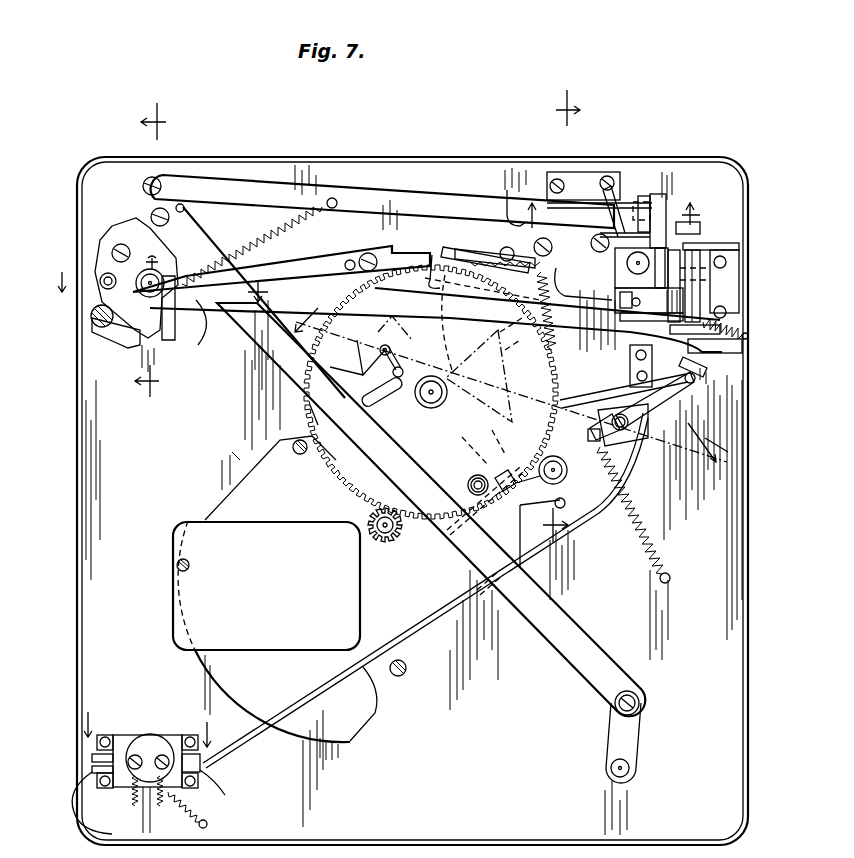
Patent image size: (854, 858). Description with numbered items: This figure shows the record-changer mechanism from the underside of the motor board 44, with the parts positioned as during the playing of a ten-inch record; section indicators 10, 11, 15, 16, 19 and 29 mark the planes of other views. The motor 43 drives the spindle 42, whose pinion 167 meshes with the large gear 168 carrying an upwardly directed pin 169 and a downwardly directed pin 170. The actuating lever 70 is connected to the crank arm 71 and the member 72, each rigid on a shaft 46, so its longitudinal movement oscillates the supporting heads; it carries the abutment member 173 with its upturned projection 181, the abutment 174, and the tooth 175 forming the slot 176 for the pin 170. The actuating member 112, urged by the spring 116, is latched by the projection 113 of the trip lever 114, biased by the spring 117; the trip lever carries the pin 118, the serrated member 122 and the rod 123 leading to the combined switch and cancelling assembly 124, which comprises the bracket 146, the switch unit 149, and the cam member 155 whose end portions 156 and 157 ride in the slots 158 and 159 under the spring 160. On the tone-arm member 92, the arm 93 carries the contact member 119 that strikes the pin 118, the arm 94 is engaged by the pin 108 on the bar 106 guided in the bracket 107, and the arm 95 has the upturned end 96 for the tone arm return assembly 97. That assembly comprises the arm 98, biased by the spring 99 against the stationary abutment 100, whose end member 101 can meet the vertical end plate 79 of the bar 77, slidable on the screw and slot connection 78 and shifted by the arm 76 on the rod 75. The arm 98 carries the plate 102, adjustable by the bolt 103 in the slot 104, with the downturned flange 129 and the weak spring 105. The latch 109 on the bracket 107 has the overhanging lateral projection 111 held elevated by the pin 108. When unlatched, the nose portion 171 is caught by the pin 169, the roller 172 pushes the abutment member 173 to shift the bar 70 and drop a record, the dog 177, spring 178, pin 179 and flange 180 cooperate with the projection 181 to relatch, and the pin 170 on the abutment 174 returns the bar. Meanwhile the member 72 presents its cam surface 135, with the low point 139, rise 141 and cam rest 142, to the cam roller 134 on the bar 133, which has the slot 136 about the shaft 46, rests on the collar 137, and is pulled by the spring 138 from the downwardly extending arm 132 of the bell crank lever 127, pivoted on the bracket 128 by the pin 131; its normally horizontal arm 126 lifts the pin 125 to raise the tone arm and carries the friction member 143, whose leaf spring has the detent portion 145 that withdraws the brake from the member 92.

The section line 10- 10 is at (554, 319).
The section line 11- 11 is at (154, 287).
The section line 15- 15 is at (138, 250).
The section line 16- 16 is at (150, 720).
The section line 19- 19 is at (517, 385).
The section line 29- 29 is at (613, 214).
The spindle 42 is at (370, 521).
The motor 43 is at (266, 586).
The motor board 44 is at (232, 454).
The shaft 46 is at (168, 341).
The actuating lever 70 is at (553, 632).
The crank arm 71 is at (610, 740).
The member 72 is at (108, 240).
The rod 75 is at (112, 255).
The arm 76 is at (100, 288).
The bar 77 is at (201, 340).
The screw and slot connection 78 is at (358, 256).
The vertical end plate 79 is at (165, 208).
The member 92 is at (668, 218).
The arm 93 is at (681, 364).
The arm 94 is at (704, 224).
The arm 95 is at (616, 268).
The upturned end 96 is at (497, 352).
The tone arm return assembly 97 is at (572, 298).
The arm 98 is at (571, 248).
The spring 99 is at (640, 336).
The stationary abutment 100 is at (496, 334).
The end member 101 is at (455, 320).
The plate 102 is at (500, 245).
The bolt 103 is at (510, 186).
The slot 104 is at (580, 204).
The spring 105 is at (480, 250).
The bar 106 is at (482, 245).
The bracket 107 is at (612, 205).
The pin 108 is at (570, 152).
The latch 109 is at (617, 248).
The overhanging lateral projection 111 is at (668, 200).
The actuating member 112 is at (598, 494).
The projection 113 is at (628, 352).
The trip lever 114 is at (697, 386).
The spring 116 is at (613, 543).
The spring 117 is at (624, 440).
The pin 118 is at (743, 356).
The contact member 119 is at (630, 406).
The member 122 is at (694, 377).
The rod 123 is at (373, 723).
The combined switch and cancelling assembly 124 is at (143, 727).
The pin 125 is at (742, 262).
The normally horizontal arm 126 is at (702, 283).
The bell crank lever 127 is at (702, 292).
The bracket 128 is at (742, 248).
The downturned flange 129 is at (456, 333).
The pin 131 is at (746, 328).
The downwardly extending arm 132 is at (722, 334).
The bar 133 is at (482, 298).
The cam roller 134 is at (140, 278).
The cam surface 135 is at (187, 203).
The slot 136 is at (155, 352).
The collar 137 is at (262, 254).
The spring 138 is at (749, 337).
The low point 139 is at (190, 210).
The rise 141 is at (92, 324).
The cam rest 142 is at (130, 340).
The friction member 143 is at (714, 360).
The detent portion 145 is at (616, 314).
The bracket 146 is at (186, 735).
The switch unit 149 is at (158, 734).
The cam member 155 is at (76, 810).
The end portion 156 is at (92, 769).
The end portion 157 is at (205, 766).
The slot 158 is at (92, 757).
The slot 159 is at (202, 773).
The spring 160 is at (207, 822).
The pinion 167 is at (398, 522).
The large gear 168 is at (310, 418).
The upwardly directed pin 169 is at (392, 354).
The downwardly directed pin 170 is at (415, 393).
The nose portion 171 is at (463, 369).
The roller 172 is at (476, 474).
The abutment member 173 is at (527, 534).
The abutment 174 is at (357, 350).
The tooth 175 is at (322, 466).
The slot 176 is at (310, 398).
The dog 177 is at (520, 470).
The spring 178 is at (568, 470).
The pin 179 is at (492, 432).
The downwardly directed flange 180 is at (506, 531).
The upturned projection 181 is at (495, 455).